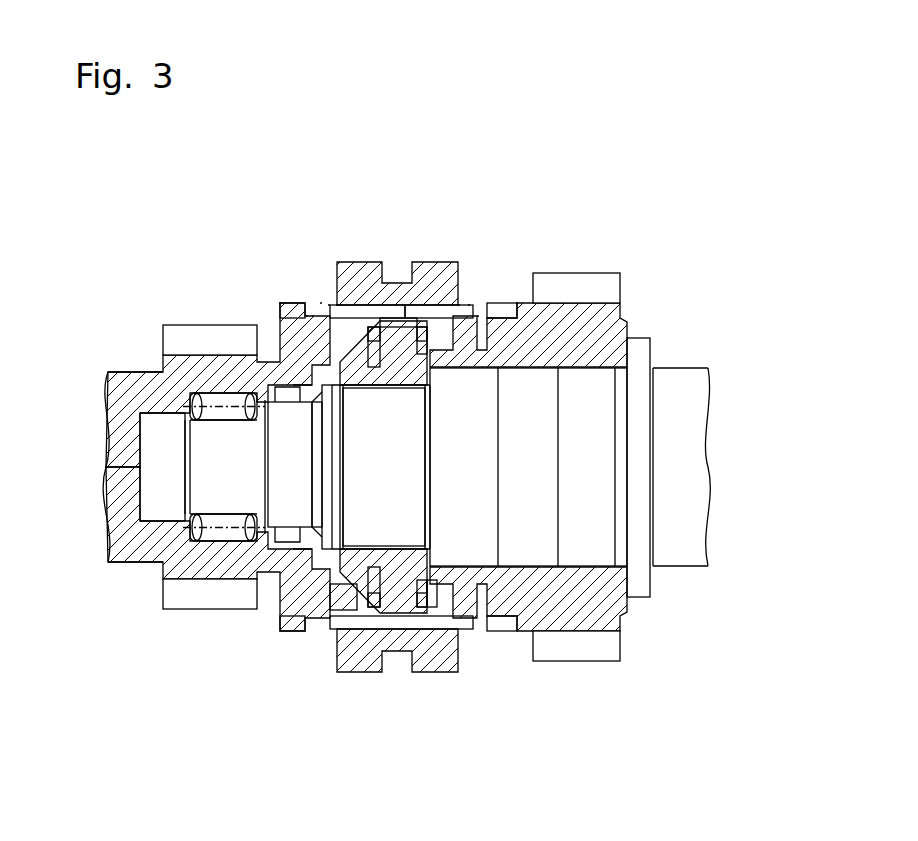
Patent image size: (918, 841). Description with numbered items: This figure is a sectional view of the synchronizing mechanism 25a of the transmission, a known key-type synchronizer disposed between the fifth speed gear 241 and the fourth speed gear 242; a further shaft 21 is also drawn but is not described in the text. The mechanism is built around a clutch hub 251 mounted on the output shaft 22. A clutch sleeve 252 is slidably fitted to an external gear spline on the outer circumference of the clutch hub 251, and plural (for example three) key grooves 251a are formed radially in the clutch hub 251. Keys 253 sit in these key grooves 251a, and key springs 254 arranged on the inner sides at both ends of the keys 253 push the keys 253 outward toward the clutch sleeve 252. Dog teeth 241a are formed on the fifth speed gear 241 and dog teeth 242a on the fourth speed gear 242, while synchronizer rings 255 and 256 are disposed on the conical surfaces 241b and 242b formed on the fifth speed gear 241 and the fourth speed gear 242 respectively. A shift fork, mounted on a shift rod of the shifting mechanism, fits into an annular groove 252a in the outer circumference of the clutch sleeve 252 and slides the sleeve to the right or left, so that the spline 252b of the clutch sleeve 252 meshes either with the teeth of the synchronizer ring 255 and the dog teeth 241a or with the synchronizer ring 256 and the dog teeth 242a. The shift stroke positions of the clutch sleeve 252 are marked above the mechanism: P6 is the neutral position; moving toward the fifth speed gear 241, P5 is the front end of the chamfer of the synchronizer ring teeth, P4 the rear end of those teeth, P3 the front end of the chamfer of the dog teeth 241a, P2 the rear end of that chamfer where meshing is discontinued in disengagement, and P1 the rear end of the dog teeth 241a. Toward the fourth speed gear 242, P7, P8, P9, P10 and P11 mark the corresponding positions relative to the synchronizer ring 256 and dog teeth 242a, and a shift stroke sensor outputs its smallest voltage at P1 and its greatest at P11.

The input shaft 21 is at (105, 413).
The output shaft 22 is at (700, 423).
The fifth speed gear 241 is at (180, 330).
The dog teeth 241a is at (280, 308).
The conical surface 241b is at (278, 600).
The fourth speed gear 242 is at (588, 284).
The dog teeth 242a is at (520, 302).
The conical surface 242b is at (505, 594).
The synchronizing mechanism 25a is at (419, 252).
The clutch hub 251 is at (402, 629).
The key grooves 251a is at (420, 318).
The clutch sleeve 252 is at (357, 262).
The annular groove 252a is at (405, 318).
The spline 252b is at (345, 672).
The keys 253 is at (370, 327).
The key springs 254 is at (373, 607).
The synchronizer ring 255 is at (320, 616).
The synchronizer ring 256 is at (468, 612).
The shift stroke position P1 is at (279, 303).
The shift stroke position P2 is at (306, 347).
The shift stroke position P3 is at (312, 347).
The shift stroke position P4 is at (320, 303).
The shift stroke position P5 is at (328, 305).
The shift stroke position P6 is at (336, 305).
The shift stroke position P7 is at (468, 305).
The shift stroke position P8 is at (477, 316).
The shift stroke position P9 is at (487, 318).
The shift stroke position P10 is at (491, 318).
The shift stroke position P11 is at (516, 303).